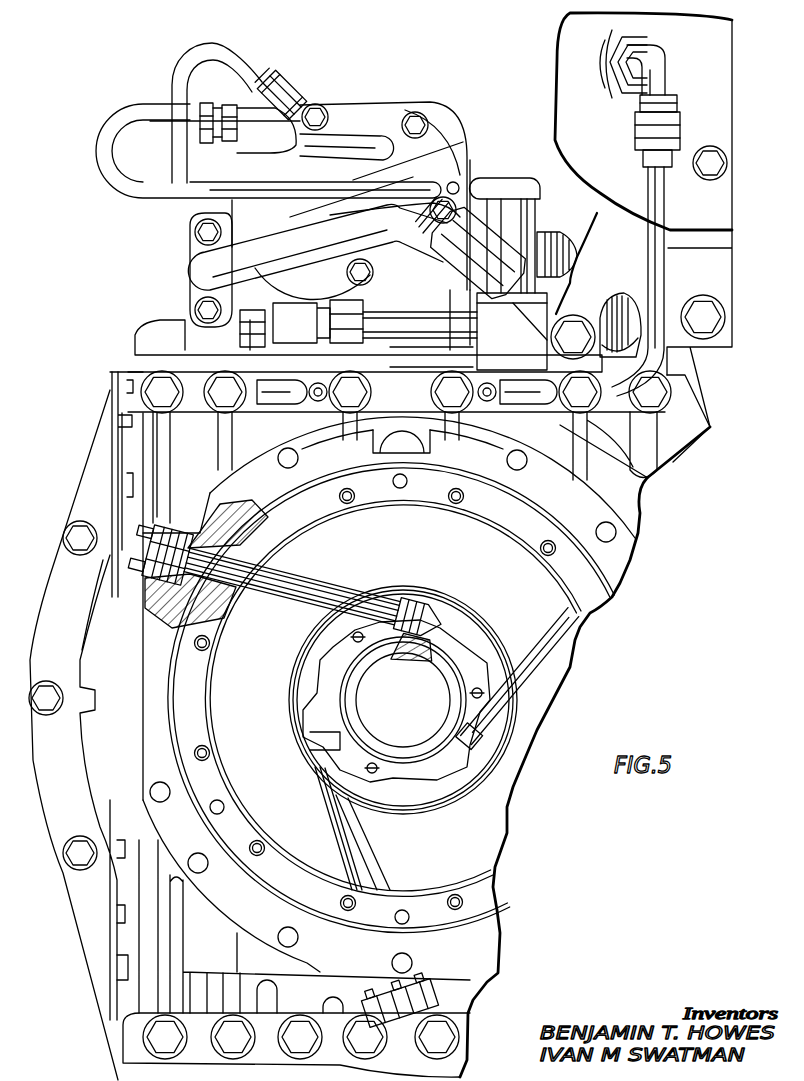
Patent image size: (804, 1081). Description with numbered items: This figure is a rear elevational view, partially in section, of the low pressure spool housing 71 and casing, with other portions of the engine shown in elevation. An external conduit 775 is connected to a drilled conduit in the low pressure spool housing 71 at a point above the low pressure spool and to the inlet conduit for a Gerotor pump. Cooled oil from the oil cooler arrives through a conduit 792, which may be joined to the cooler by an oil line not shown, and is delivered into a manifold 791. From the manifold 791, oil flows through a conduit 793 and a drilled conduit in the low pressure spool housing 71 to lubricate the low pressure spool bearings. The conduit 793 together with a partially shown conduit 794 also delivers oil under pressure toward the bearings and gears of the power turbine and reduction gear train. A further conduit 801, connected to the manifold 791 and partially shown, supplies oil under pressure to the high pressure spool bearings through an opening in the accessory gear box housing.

The low pressure spool housing 71 is at (689, 392).
The external conduit 775 is at (196, 276).
The manifold 791 is at (522, 180).
The conduit 792 is at (557, 236).
The conduit 793 is at (406, 318).
The conduit 794 is at (277, 384).
The conduit 801 is at (254, 74).